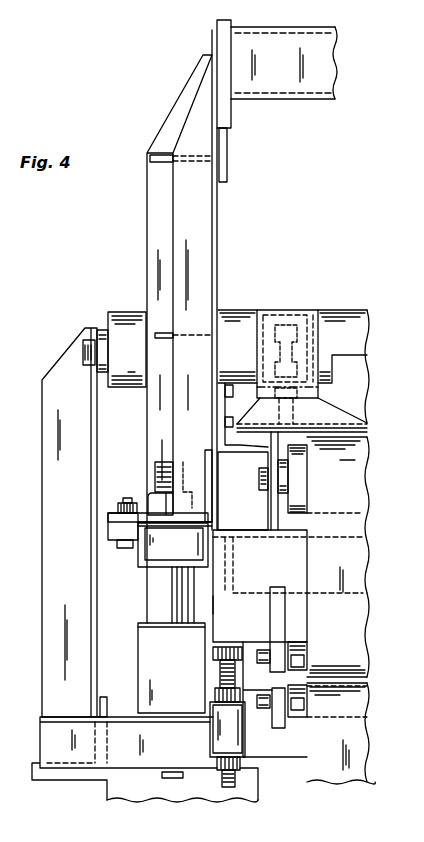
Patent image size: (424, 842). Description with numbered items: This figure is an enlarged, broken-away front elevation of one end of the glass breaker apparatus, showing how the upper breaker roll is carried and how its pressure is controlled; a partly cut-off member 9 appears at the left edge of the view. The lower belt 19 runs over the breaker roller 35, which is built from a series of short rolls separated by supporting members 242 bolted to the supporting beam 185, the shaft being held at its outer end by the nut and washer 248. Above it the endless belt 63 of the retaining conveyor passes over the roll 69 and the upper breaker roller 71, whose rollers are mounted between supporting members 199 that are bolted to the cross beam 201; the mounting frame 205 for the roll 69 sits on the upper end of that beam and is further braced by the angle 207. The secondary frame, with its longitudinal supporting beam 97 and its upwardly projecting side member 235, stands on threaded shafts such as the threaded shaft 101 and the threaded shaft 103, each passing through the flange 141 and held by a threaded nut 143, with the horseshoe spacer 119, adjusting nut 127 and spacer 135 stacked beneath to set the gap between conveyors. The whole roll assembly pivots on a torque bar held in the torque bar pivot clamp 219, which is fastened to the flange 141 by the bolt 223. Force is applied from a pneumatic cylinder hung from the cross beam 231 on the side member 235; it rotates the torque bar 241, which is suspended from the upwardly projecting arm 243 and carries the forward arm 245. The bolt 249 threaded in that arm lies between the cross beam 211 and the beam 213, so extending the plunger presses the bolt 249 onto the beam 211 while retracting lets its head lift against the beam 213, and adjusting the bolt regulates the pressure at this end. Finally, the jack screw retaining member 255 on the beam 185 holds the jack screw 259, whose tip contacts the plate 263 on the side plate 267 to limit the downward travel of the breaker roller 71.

The frame member 9 is at (8, 687).
The belt 19 is at (370, 755).
The breaker roller 35 is at (300, 720).
The endless belt 63 is at (363, 505).
The roll 69 is at (300, 474).
The breaker roller 71 is at (300, 642).
The longitudinal supporting beam 97 is at (205, 462).
The threaded shaft 101 is at (11, 589).
The threaded shaft 103 is at (161, 462).
The horseshoe spacer 119 is at (138, 654).
The adjusting nut 127 is at (152, 593).
The spacer 135 is at (145, 552).
The flange 141 is at (108, 532).
The threaded nut 143 is at (157, 498).
The supporting beam 185 is at (298, 752).
The supporting member 199 is at (271, 636).
The cross beam 201 is at (300, 603).
The mounting frame 205 is at (262, 491).
The angle 207 is at (293, 552).
The cross beam 211 is at (318, 398).
The beam 213 is at (367, 428).
The torque bar pivot clamp 219 is at (108, 522).
The bolt 223 is at (118, 505).
The cross beam 231 is at (277, 99).
The side member 235 is at (157, 215).
The torque bar 241 is at (127, 318).
The supporting member 242 is at (272, 720).
The upwardly projecting arm 243 is at (42, 420).
The arm 245 is at (300, 316).
The nut and washer 248 is at (267, 694).
The bolt 249 is at (275, 345).
The jack screw retaining member 255 is at (218, 741).
The jack screw 259 is at (215, 677).
The plate 263 is at (212, 646).
The side plate 267 is at (215, 605).